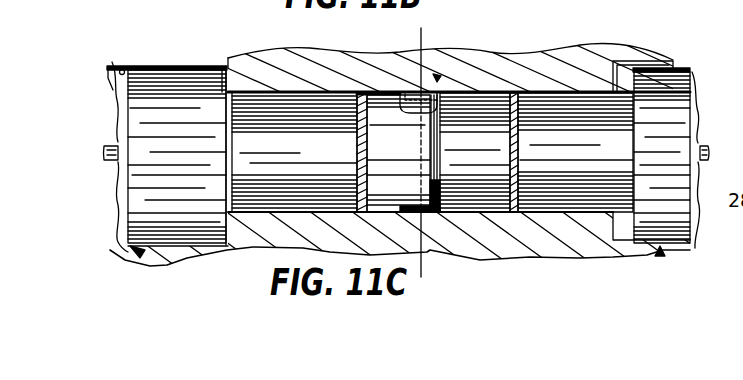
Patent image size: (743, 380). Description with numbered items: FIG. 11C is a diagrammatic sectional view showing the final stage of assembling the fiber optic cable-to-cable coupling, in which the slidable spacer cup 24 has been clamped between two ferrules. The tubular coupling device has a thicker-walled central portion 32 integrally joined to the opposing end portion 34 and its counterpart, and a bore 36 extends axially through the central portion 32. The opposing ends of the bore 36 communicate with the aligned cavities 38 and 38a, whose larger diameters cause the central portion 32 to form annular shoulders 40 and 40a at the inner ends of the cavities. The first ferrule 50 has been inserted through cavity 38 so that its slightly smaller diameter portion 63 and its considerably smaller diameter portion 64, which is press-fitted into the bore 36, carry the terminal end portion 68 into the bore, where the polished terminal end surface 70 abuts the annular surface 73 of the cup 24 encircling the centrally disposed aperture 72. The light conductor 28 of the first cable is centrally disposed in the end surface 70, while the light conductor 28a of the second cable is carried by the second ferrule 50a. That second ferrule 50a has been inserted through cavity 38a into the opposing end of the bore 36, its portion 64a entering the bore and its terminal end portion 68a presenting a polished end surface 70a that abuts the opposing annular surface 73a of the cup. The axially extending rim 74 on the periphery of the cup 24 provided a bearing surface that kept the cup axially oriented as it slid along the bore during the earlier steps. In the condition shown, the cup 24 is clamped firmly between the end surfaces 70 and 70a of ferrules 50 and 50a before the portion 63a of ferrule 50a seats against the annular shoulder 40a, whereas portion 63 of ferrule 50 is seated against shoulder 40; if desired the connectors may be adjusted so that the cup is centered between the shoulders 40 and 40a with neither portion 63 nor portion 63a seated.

The spacer cup 24 is at (441, 113).
The light conductor 28 is at (110, 147).
The light conductor 28a is at (702, 148).
The central portion 32 is at (293, 66).
The end portion 34 is at (174, 60).
The bore 36 is at (258, 90).
The cavity 38 is at (128, 69).
The cavity 38a is at (654, 68).
The annular shoulder 40 is at (221, 80).
The annular shoulder 40a is at (624, 72).
The ferrule 50 is at (138, 252).
The ferrule 50a is at (661, 252).
The portion of ferrule 63 is at (111, 90).
The portion of ferrule 63a is at (679, 89).
The portion of ferrule 64 is at (322, 108).
The portion of ferrule 64a is at (560, 110).
The terminal end portion 68 is at (381, 104).
The terminal end portion 68a is at (522, 110).
The terminal end surface 70 is at (446, 210).
The polished end surface 70a is at (422, 184).
The aperture 72 is at (440, 143).
The annular surface 73 is at (420, 98).
The annular surface 73a is at (493, 107).
The rim 74 is at (438, 80).